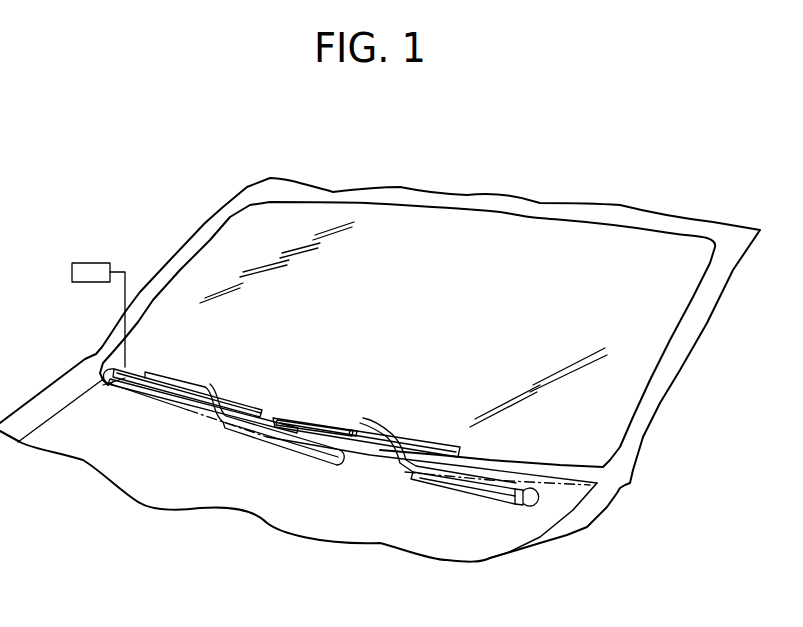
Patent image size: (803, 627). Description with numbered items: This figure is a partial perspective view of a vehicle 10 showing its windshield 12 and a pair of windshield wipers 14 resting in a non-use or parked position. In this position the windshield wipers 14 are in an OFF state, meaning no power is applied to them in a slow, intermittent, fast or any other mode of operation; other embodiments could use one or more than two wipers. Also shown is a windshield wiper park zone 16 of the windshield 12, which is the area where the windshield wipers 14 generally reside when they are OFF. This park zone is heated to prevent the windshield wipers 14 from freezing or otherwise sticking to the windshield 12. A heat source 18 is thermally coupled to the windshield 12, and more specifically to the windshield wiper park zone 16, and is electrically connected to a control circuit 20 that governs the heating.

The vehicle 10 is at (682, 392).
The windshield 12 is at (650, 323).
The windshield wipers 14 is at (247, 438).
The windshield wiper park zone 16 is at (272, 412).
The heat source 18 is at (125, 378).
The control circuit 20 is at (80, 262).